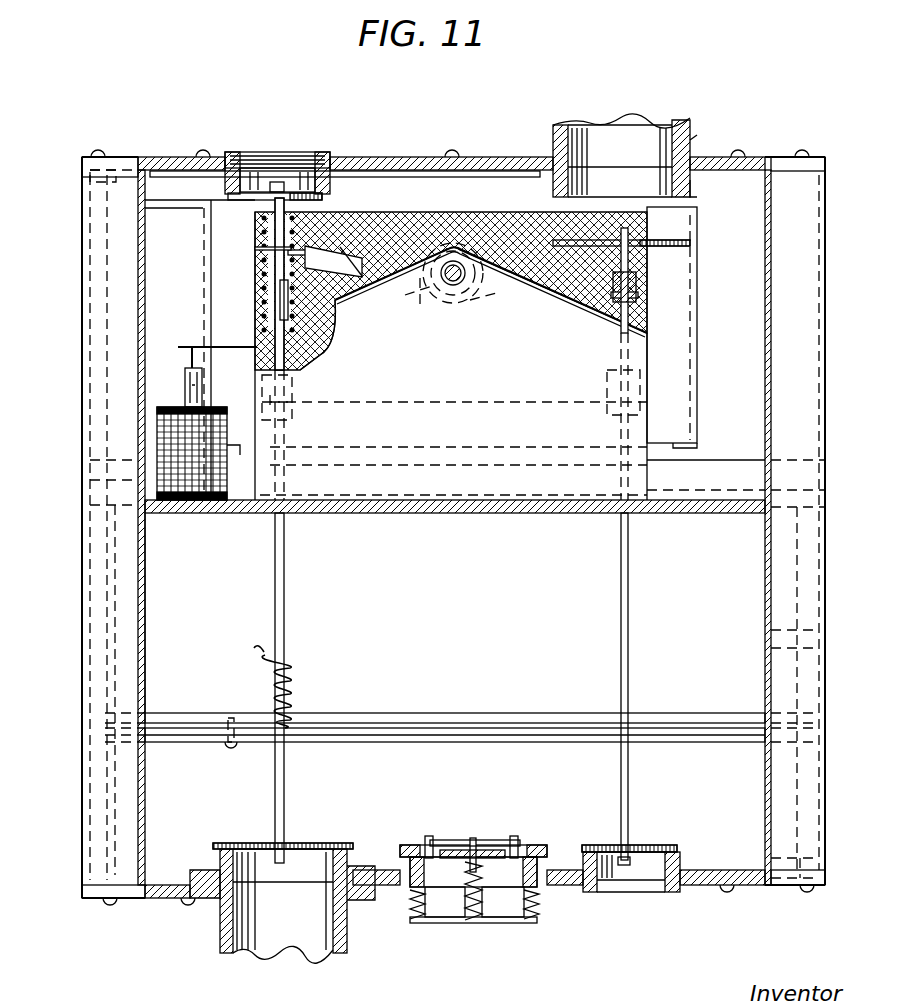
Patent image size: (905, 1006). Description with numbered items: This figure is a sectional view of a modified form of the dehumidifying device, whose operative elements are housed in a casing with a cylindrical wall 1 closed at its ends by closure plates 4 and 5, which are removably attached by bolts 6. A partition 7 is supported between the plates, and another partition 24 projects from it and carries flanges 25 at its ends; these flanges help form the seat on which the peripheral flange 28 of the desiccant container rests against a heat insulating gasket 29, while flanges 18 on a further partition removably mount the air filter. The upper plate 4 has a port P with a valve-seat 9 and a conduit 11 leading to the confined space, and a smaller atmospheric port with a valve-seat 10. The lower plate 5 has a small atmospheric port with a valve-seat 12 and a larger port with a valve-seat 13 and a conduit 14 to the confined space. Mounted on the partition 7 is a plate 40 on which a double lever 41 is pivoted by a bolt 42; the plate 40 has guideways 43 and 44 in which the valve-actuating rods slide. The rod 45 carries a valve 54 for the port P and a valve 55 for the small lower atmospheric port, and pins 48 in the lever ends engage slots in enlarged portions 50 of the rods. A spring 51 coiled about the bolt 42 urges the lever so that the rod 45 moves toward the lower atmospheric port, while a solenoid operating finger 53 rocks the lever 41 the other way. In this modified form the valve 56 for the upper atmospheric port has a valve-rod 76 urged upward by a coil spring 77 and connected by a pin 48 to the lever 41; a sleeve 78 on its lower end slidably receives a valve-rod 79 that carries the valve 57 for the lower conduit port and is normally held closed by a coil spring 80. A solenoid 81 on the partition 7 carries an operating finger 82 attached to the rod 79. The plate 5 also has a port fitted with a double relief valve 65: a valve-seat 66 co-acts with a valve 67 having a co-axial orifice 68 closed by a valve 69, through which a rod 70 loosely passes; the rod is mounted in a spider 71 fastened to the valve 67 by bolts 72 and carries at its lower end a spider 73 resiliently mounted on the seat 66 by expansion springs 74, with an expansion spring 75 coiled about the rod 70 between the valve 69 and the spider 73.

The cylindrical wall 1 is at (766, 620).
The closure plate 4 is at (386, 162).
The closure plate 5 is at (760, 887).
The bolts 6 is at (203, 157).
The partition 7 is at (460, 506).
The valve-seat 9 is at (692, 189).
The valve-seat 10 is at (340, 180).
The conduit 11 is at (598, 130).
The valve-seat 12 is at (676, 858).
The valve-seat 13 is at (215, 860).
The conduit 14 is at (262, 926).
The flanges 18 is at (210, 294).
The partition 24 is at (528, 651).
The flanges 25 is at (432, 714).
The peripheral flange 28 is at (585, 742).
The gasket 29 is at (350, 742).
The plate 40 is at (462, 377).
The double lever 41 is at (580, 290).
The bolt 42 is at (460, 282).
The guideway 43 is at (606, 396).
The guideway 44 is at (290, 398).
The valve-actuating rod 45 is at (620, 583).
The pins 48 is at (294, 252).
The enlarged portion 50 is at (632, 300).
The spring 51 is at (423, 290).
The operating finger 53 is at (352, 270).
The valve 54 is at (685, 240).
The valve 55 is at (660, 845).
The valve 56 is at (240, 196).
The valve 57 is at (243, 841).
The double relief valve 65 is at (528, 845).
The valve-seat 66 is at (540, 858).
The valve 67 is at (410, 845).
The co-axial orifice 68 is at (485, 845).
The valve 69 is at (491, 891).
The rod 70 is at (445, 902).
The spider 71 is at (468, 846).
The bolts 72 is at (429, 836).
The spider 73 is at (450, 922).
The expansion springs 74 is at (408, 907).
The expansion spring 75 is at (503, 902).
The valve-rod 76 is at (272, 216).
The coil spring 77 is at (268, 268).
The sleeve 78 is at (306, 332).
The valve-rod 79 is at (284, 582).
The coil spring 80 is at (287, 684).
The solenoid 81 is at (218, 504).
The operating finger 82 is at (215, 345).
The port P is at (690, 145).